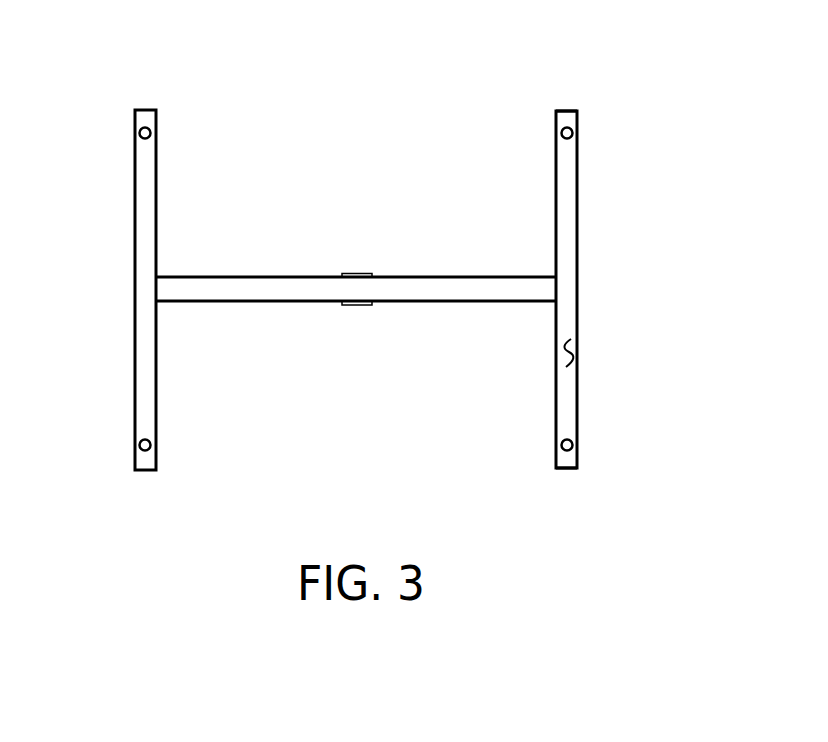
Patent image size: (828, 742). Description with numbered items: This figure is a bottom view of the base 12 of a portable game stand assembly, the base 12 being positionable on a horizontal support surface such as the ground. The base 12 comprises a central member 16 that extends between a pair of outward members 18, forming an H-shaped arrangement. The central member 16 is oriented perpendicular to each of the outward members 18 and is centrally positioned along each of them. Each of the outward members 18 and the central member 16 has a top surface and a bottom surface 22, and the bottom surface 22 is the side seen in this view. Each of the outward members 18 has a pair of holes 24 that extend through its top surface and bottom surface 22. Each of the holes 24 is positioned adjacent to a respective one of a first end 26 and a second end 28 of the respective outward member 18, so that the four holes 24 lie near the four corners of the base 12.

The base 12 is at (431, 232).
The central member 16 is at (485, 296).
The outward members 18 is at (133, 176).
The bottom surface 22 is at (577, 350).
The holes 24 is at (134, 131).
The first end 26 is at (566, 108).
The second end 28 is at (578, 468).